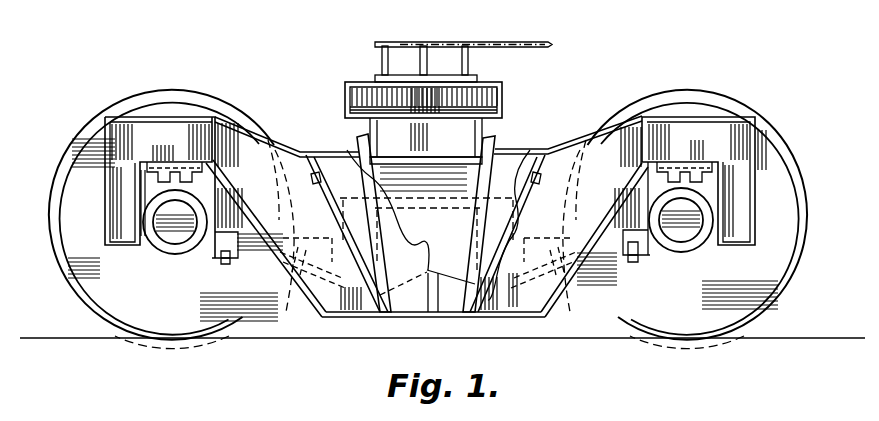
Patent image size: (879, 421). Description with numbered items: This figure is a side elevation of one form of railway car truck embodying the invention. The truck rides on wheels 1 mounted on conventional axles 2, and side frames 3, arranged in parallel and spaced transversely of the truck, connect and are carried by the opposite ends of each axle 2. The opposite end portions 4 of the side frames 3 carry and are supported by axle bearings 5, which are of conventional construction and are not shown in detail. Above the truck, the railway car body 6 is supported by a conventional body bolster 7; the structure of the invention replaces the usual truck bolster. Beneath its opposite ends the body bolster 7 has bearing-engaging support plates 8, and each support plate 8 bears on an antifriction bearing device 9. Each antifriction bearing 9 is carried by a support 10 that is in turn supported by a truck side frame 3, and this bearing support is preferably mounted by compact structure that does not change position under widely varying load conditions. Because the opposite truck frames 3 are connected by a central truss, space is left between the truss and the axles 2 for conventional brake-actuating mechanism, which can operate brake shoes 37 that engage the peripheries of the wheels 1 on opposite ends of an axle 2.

The wheels 1 is at (73, 228).
The axles 2 is at (167, 233).
The side frames 3 is at (292, 140).
The end portions 4 is at (152, 128).
The axle bearings 5 is at (147, 170).
The railway car body 6 is at (493, 40).
The body bolster 7 is at (420, 54).
The support plates 8 is at (348, 117).
The antifriction bearing device 9 is at (483, 128).
The support 10 is at (428, 220).
The brake shoes 37 is at (283, 300).